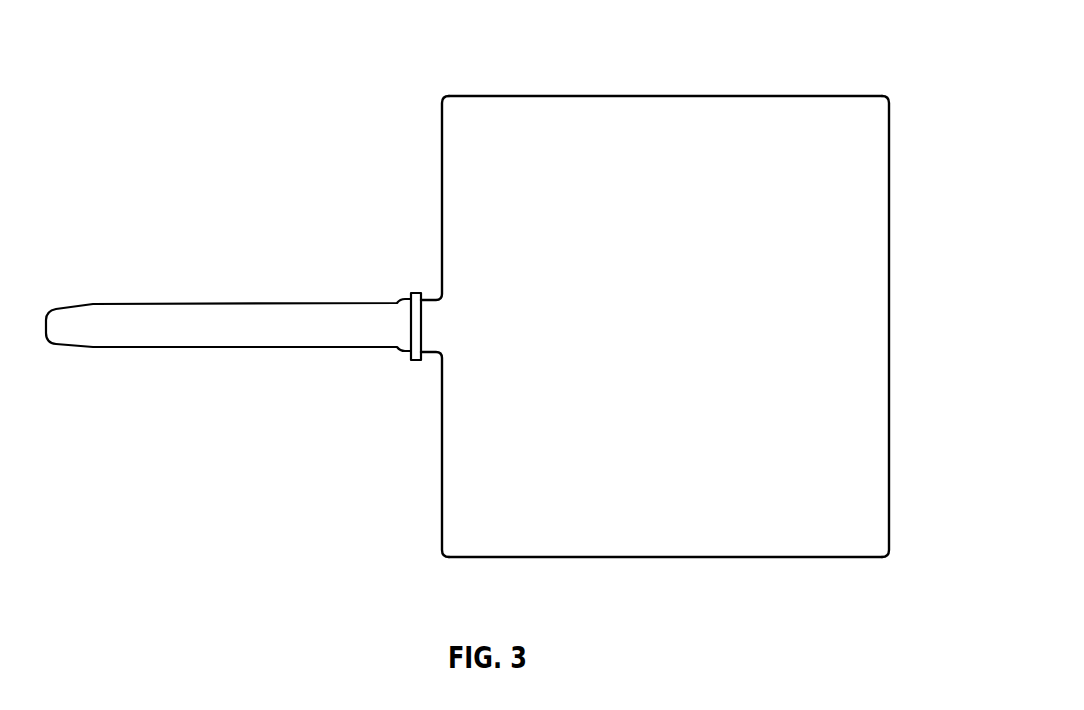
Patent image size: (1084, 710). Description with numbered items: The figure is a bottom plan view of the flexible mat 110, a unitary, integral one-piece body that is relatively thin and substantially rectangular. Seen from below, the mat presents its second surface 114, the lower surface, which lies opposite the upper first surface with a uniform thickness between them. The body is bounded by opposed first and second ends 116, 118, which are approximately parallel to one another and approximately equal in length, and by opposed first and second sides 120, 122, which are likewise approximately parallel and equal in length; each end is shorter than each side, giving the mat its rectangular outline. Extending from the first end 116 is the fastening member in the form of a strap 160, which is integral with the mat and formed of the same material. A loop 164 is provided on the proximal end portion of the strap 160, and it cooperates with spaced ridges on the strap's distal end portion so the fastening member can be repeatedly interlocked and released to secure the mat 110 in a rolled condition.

The flexible mat 110 is at (501, 328).
The second surface 114 is at (659, 328).
The first end 116 is at (889, 305).
The second end 118 is at (442, 479).
The first side 120 is at (624, 558).
The second side 122 is at (740, 96).
The strap 160 is at (260, 346).
The loop 164 is at (411, 330).